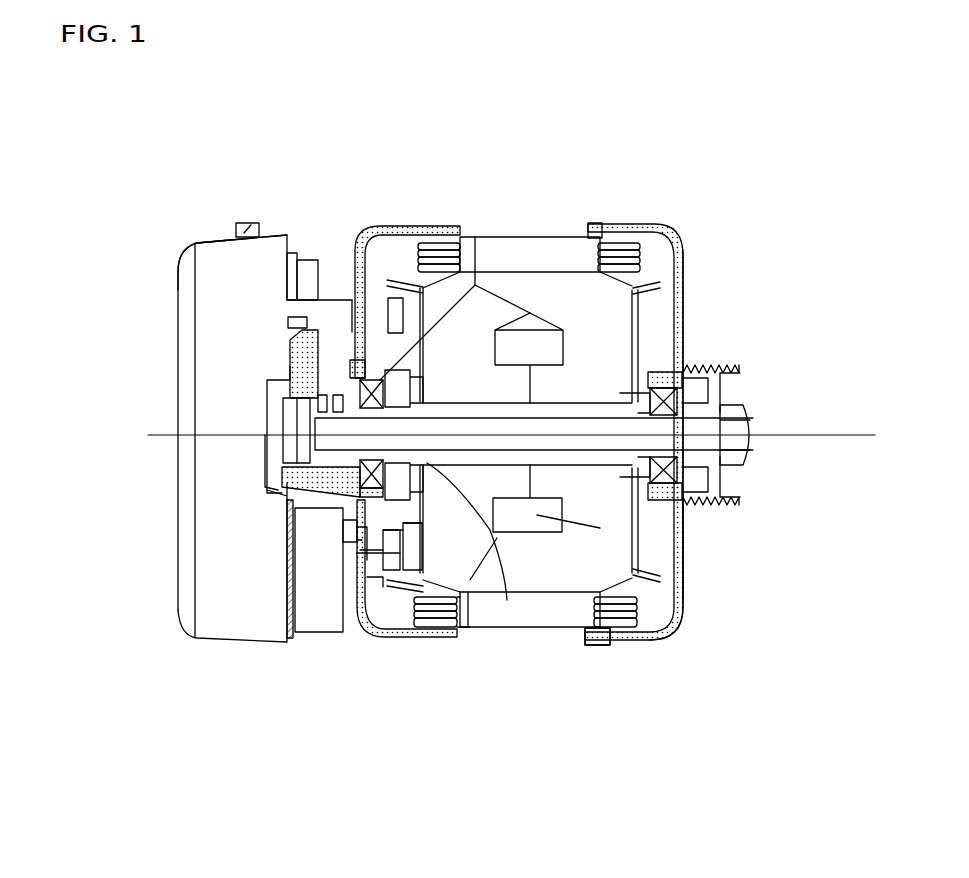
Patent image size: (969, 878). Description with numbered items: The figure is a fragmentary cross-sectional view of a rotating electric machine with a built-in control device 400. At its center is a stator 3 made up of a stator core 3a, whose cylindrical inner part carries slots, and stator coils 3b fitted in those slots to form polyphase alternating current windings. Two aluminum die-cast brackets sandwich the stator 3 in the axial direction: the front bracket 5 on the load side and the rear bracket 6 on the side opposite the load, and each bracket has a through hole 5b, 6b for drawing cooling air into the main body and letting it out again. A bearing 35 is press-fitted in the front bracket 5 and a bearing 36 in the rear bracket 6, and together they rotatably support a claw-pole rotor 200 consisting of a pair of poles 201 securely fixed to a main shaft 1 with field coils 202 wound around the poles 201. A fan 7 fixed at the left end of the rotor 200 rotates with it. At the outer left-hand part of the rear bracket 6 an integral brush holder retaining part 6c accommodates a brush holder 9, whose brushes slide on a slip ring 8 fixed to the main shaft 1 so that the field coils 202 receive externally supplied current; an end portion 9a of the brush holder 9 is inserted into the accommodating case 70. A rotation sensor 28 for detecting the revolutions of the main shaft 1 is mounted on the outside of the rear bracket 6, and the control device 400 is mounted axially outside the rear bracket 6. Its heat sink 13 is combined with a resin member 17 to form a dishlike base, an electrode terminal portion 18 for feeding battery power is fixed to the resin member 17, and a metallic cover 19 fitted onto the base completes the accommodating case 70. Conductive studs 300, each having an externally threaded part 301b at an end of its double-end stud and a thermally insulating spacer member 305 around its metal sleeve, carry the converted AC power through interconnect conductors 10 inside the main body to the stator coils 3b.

The main shaft 1 is at (507, 600).
The stator 3 is at (532, 232).
The stator core 3a is at (575, 243).
The stator coils 3b is at (626, 240).
The front bracket 5 is at (685, 278).
The through hole 5b is at (685, 545).
The rear bracket 6 is at (392, 227).
The through hole 6b is at (345, 510).
The brush holder retaining part 6c is at (340, 362).
The fan 7 is at (430, 232).
The slip ring 8 is at (265, 478).
The brush holder 9 is at (332, 295).
The end portion 9a is at (302, 232).
The interconnect conductors 10 is at (467, 600).
The heat sink 13 is at (310, 633).
The resin member 17 is at (215, 397).
The electrode terminal portion 18 is at (256, 223).
The metallic cover 19 is at (178, 317).
The rotation sensor 28 is at (297, 450).
The bearing 35 is at (665, 372).
The bearing 36 is at (500, 232).
The accommodating case 70 is at (178, 262).
The rotor 200 is at (705, 758).
The poles 201 is at (603, 647).
The field coils 202 is at (660, 630).
The conductive studs 300 is at (352, 630).
The externally threaded part 301b is at (467, 590).
The spacer member 305 is at (372, 555).
The control device 400 is at (225, 235).